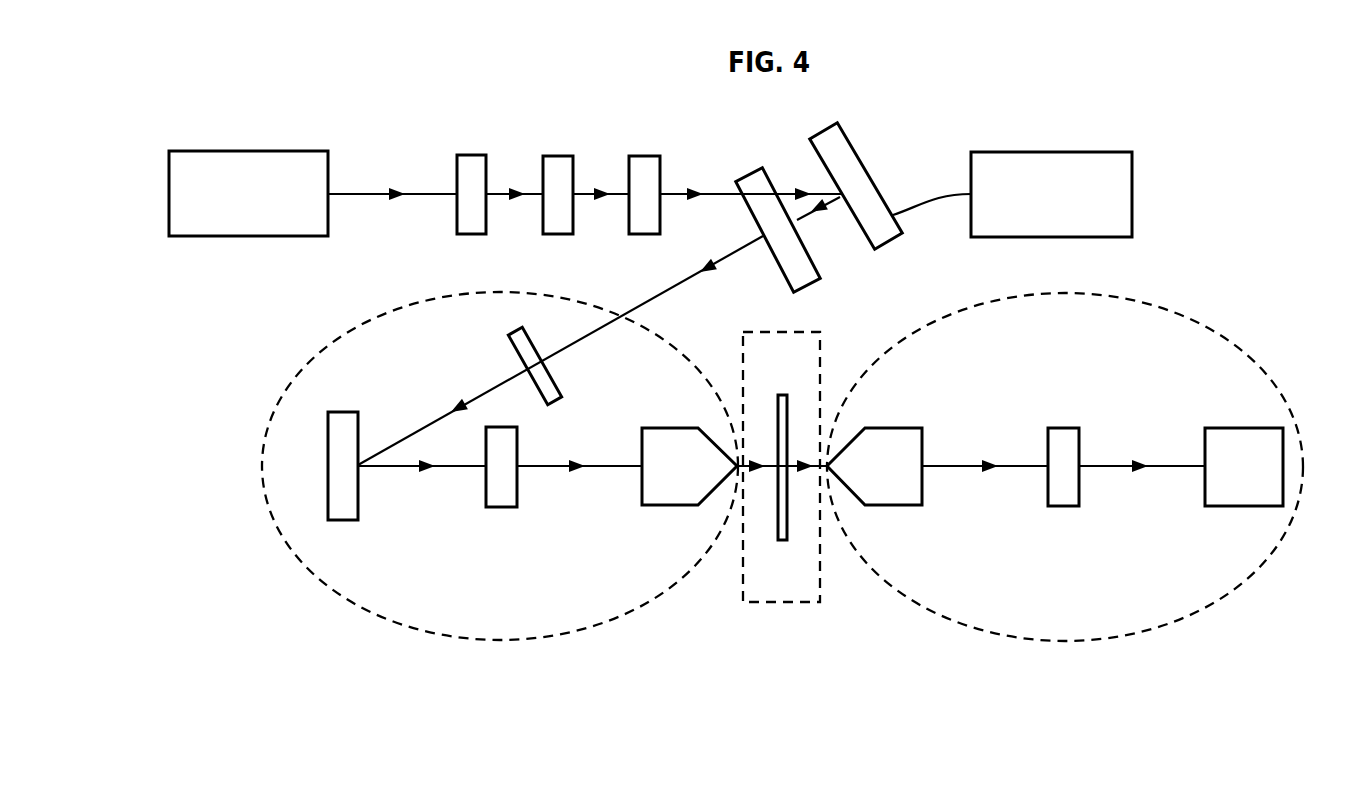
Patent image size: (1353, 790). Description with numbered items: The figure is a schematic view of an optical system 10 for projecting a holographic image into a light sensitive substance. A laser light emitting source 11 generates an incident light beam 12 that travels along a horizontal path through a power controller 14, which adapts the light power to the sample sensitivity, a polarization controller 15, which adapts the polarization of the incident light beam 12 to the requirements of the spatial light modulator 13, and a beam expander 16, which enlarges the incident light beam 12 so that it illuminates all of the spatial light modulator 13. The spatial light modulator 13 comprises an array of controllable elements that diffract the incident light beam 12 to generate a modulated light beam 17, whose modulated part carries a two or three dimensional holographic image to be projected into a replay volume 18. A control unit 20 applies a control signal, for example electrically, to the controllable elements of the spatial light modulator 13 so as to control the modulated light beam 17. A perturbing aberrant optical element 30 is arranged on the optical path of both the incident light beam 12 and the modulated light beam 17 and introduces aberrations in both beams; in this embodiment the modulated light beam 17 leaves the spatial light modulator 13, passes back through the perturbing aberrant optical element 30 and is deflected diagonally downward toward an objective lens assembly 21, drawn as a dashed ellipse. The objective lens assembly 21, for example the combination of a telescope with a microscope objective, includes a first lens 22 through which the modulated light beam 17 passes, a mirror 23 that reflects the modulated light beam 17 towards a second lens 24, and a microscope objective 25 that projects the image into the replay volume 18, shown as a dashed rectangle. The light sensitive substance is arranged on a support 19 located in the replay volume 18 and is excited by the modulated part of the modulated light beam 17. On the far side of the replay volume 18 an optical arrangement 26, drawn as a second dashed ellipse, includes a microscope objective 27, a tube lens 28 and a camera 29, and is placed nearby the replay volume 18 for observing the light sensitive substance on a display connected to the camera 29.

The optical system 10 is at (266, 311).
The laser light emitting source 11 is at (248, 166).
The incident light beam 12 is at (360, 191).
The spatial light modulator 13 is at (857, 187).
The power controller 14 is at (472, 223).
The polarization controller 15 is at (560, 224).
The beam expander 16 is at (645, 224).
The modulated light beam 17 is at (805, 219).
The replay volume 18 is at (783, 603).
The support 19 is at (783, 541).
The control unit 20 is at (1050, 168).
The objective lens assembly 21 is at (498, 641).
The first lens 22 is at (552, 383).
The mirror 23 is at (343, 508).
The second lens 24 is at (500, 497).
The microscope objective 25 is at (668, 491).
The optical arrangement 26 is at (1062, 642).
The microscope objective 27 is at (892, 491).
The tube lens 28 is at (1065, 494).
The camera 29 is at (1245, 494).
The perturbing aberrant optical element 30 is at (793, 266).